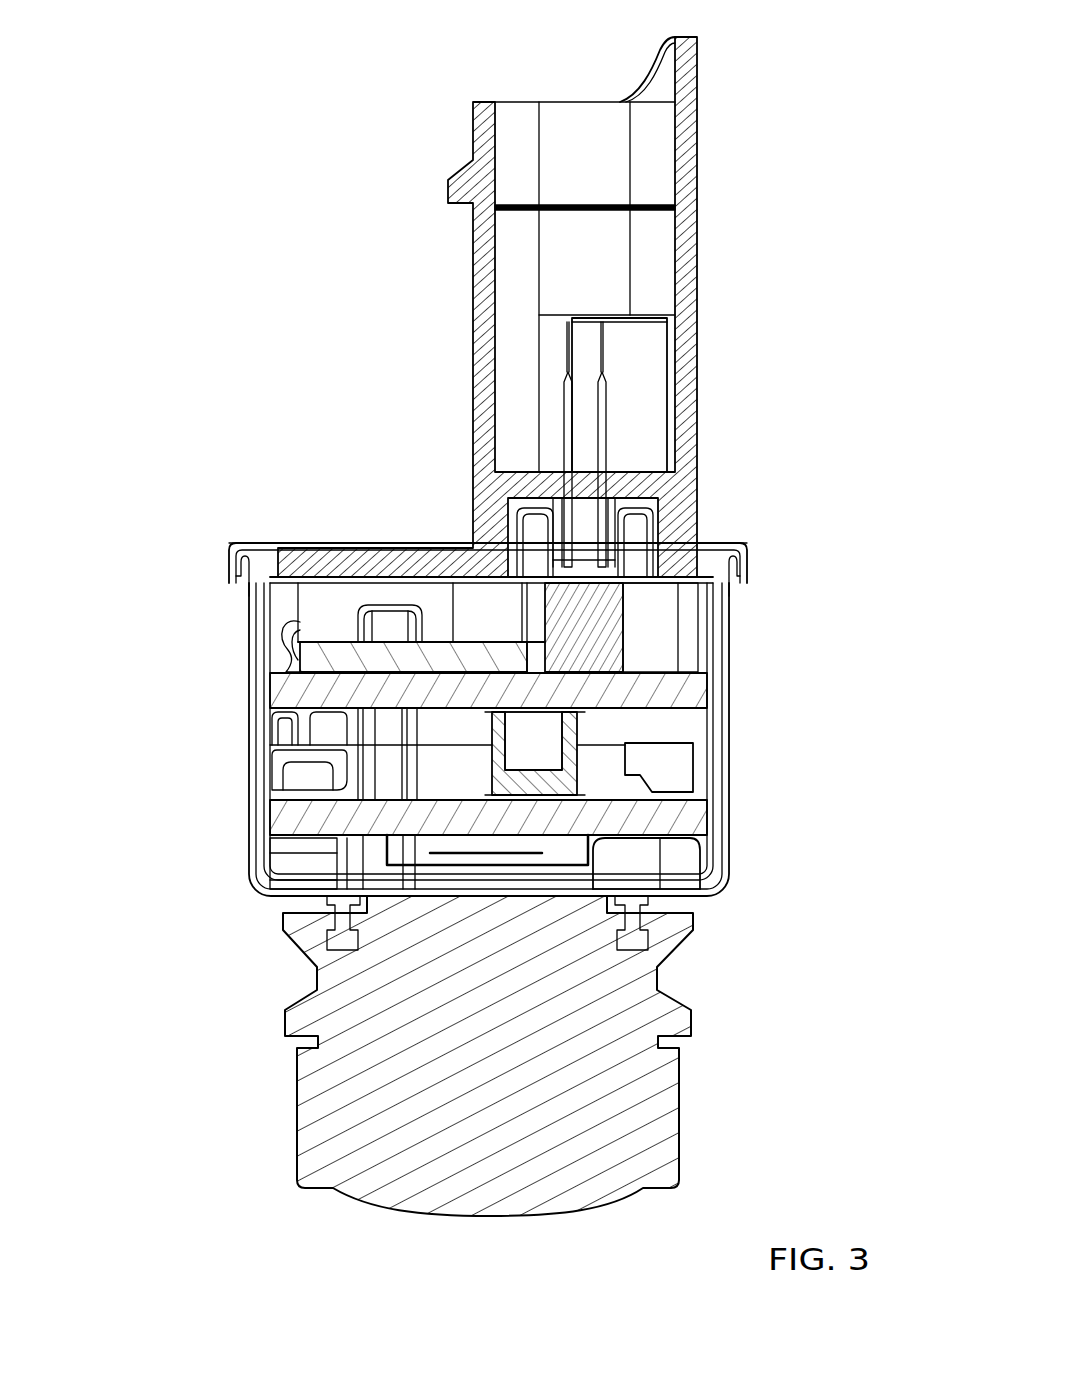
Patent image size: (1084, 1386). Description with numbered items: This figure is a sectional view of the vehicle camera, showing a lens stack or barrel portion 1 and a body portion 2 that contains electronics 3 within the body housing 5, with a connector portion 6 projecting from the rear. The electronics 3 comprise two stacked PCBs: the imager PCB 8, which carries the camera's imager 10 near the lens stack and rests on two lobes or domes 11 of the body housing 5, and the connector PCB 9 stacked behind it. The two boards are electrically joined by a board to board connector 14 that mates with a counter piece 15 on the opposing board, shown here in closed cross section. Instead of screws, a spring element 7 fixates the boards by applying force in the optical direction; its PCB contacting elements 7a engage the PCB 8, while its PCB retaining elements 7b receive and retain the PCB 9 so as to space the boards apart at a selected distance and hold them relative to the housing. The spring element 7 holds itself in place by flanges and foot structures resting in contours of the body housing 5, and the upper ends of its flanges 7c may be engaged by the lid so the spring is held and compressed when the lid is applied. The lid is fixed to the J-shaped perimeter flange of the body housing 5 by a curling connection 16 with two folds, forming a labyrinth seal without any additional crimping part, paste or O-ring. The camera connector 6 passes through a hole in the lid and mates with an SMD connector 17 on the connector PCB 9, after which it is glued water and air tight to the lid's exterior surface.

The lens stack or barrel portion 1 is at (622, 1142).
The body portion 2 is at (766, 774).
The electronics 3 is at (622, 723).
The body housing 5 is at (732, 657).
The connector portion 6 is at (693, 155).
The spring element 7 is at (665, 768).
The PCB contacting elements 7a is at (298, 790).
The PCB retaining elements 7b is at (283, 630).
The flanges 7c is at (478, 612).
The PCB 8 is at (677, 820).
The PCB 9 is at (688, 685).
The imager 10 is at (565, 852).
The lobes or domes 11 is at (565, 837).
The board to board connector 14 is at (500, 778).
The counter piece 15 is at (503, 730).
The curling connection 16 is at (761, 549).
The SMD connector 17 is at (615, 635).